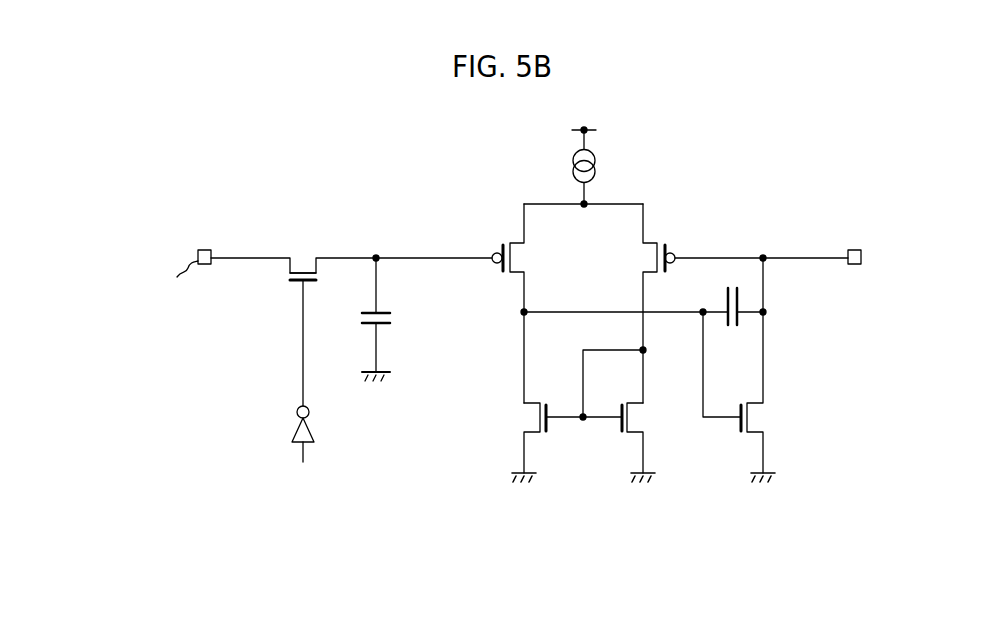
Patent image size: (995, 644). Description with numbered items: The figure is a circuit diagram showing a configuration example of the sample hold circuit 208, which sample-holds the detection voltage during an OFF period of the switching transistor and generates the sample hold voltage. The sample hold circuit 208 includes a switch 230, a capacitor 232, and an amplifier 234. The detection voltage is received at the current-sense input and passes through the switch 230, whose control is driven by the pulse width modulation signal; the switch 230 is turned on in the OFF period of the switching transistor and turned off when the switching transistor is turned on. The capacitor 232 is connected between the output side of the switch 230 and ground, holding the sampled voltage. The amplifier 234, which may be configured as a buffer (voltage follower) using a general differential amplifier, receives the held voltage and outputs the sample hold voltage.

The sample hold circuit 208 is at (550, 600).
The switch 230 is at (307, 254).
The capacitor 232 is at (392, 319).
The amplifier 234 is at (787, 500).